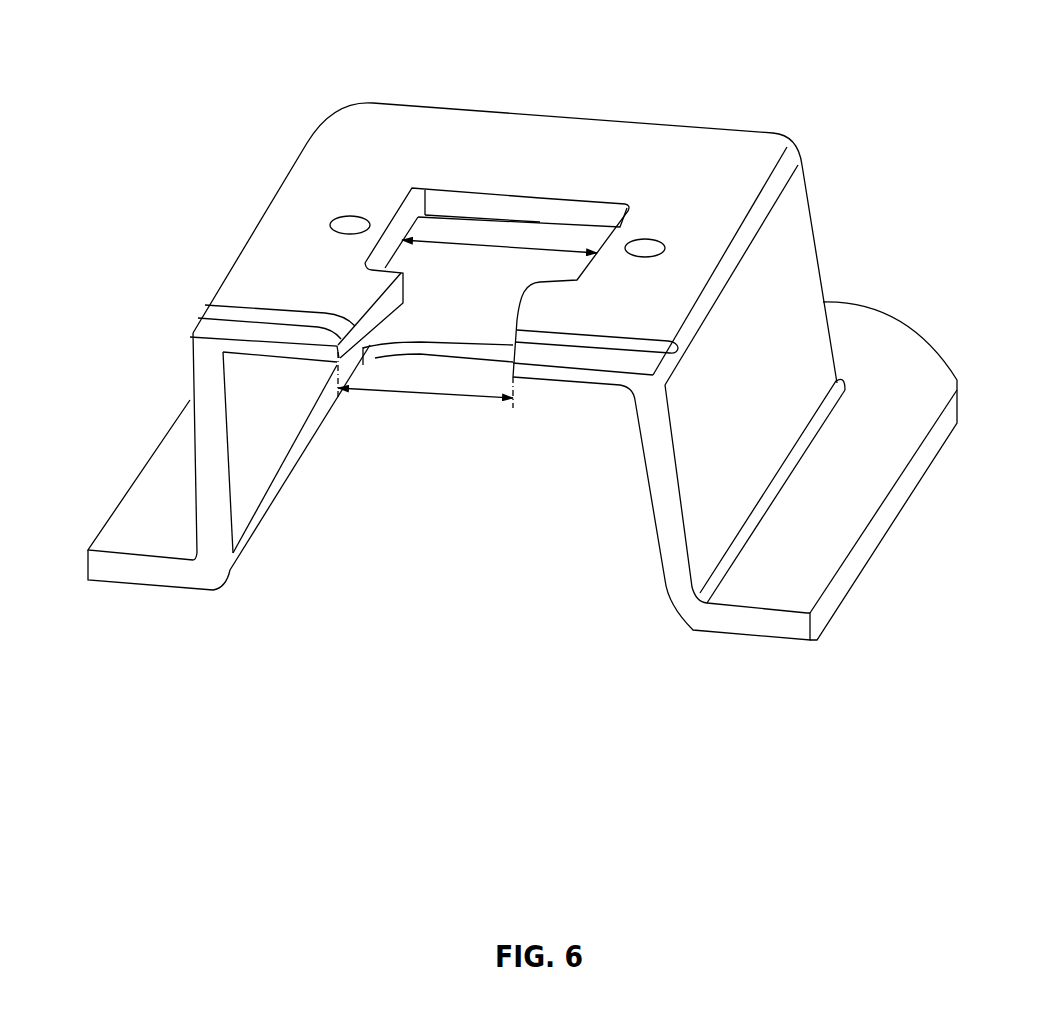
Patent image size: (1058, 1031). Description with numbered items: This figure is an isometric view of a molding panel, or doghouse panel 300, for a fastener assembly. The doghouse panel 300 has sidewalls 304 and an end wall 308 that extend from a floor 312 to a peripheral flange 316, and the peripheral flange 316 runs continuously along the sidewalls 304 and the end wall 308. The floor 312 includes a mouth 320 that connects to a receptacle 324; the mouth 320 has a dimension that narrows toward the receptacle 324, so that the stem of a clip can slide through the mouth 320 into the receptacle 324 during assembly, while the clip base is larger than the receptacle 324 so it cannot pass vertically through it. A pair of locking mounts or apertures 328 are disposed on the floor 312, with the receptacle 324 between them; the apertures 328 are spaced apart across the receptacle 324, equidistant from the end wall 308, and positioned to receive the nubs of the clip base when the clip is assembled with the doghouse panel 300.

The doghouse panel 300 is at (145, 74).
The sidewalls 304 is at (240, 385).
The end wall 308 is at (470, 233).
The floor 312 is at (362, 127).
The peripheral flange 316 is at (137, 513).
The mouth 320 is at (398, 330).
The receptacle 324 is at (528, 235).
The apertures 328 is at (341, 211).